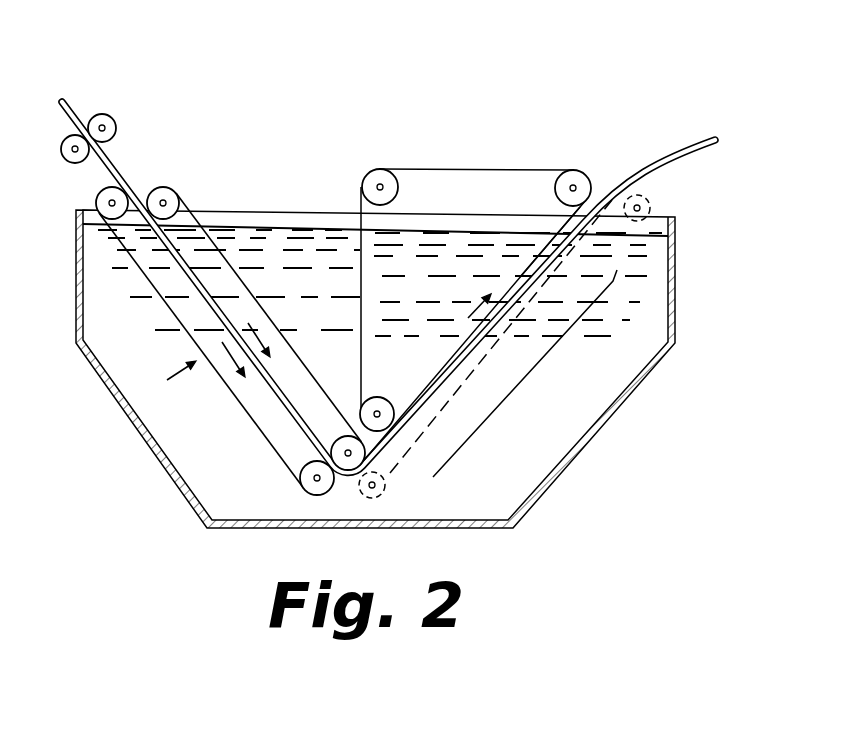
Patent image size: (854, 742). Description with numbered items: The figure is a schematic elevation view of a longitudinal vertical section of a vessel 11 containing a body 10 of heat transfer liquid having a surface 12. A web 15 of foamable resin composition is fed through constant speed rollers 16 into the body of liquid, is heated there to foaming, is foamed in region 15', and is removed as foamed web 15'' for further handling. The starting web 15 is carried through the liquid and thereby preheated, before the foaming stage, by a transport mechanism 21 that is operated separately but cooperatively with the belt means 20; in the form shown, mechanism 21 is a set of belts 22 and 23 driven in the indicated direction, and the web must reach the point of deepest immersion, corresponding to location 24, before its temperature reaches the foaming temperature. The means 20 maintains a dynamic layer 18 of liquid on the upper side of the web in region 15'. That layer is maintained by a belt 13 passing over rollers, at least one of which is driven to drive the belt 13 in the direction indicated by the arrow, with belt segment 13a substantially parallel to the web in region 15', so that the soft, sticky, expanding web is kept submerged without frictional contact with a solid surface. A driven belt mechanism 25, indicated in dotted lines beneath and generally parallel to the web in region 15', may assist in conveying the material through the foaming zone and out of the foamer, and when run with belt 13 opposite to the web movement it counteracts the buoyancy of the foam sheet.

The body of heat transfer liquid 10 is at (234, 467).
The vessel 11 is at (170, 477).
The surface 12 is at (304, 211).
The belt 13 is at (437, 172).
The belt segment 13a is at (455, 352).
The web of foamable resin composition 15 is at (388, 258).
The region 15' is at (503, 338).
The foamed web 15'' is at (696, 116).
The constant speed rollers 16 is at (114, 127).
The dynamic layer 18 is at (519, 277).
The means 20 is at (494, 160).
The mechanism 21 is at (162, 376).
The belt 22 is at (170, 309).
The belt 23 is at (315, 377).
The location 24 is at (351, 492).
The driven belt mechanism 25 is at (612, 246).